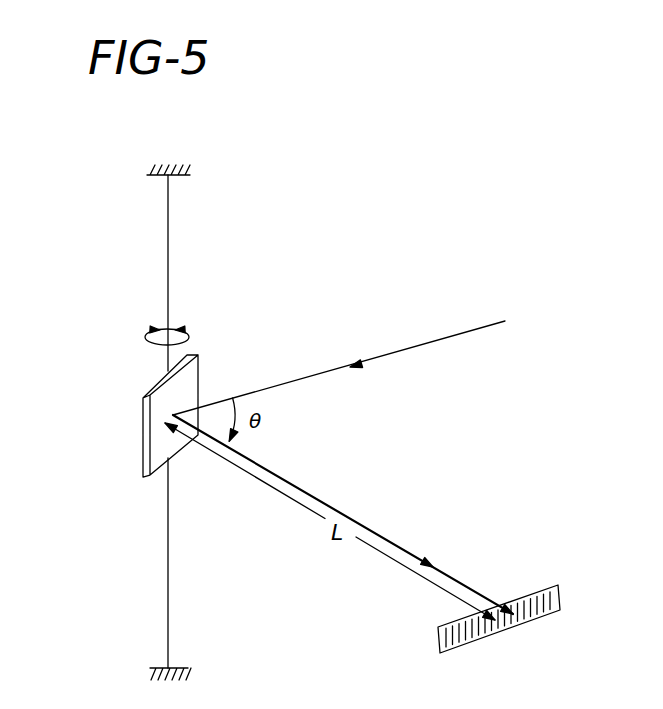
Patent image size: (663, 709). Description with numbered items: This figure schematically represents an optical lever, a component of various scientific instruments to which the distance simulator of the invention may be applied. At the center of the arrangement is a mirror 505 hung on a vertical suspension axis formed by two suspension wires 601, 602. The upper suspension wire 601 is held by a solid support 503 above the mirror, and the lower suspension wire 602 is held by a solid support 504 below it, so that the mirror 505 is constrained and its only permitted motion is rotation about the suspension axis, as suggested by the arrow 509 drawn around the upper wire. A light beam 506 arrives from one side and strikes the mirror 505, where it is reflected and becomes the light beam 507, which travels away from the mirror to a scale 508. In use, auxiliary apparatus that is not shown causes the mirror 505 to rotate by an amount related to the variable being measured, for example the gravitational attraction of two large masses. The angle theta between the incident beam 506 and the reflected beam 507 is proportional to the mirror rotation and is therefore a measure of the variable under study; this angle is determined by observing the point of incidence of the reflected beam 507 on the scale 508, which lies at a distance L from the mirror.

The solid support 503 is at (178, 177).
The solid support 504 is at (178, 668).
The mirror 505 is at (143, 452).
The light beam 506 is at (328, 368).
The light beam 507 is at (303, 490).
The scale 508 is at (542, 587).
The arrow 509 is at (189, 332).
The suspension wire 601 is at (168, 225).
The suspension wire 602 is at (168, 562).